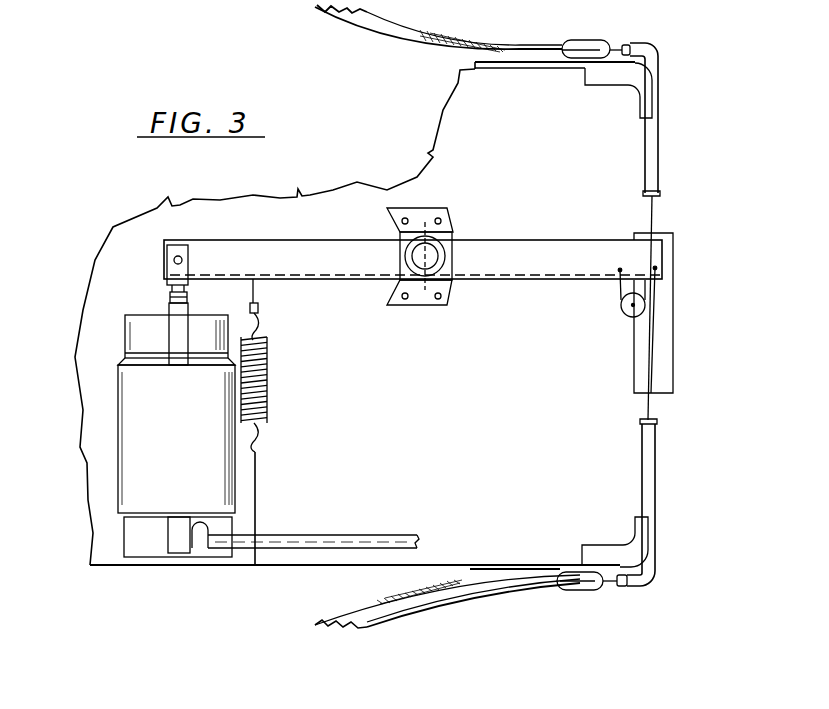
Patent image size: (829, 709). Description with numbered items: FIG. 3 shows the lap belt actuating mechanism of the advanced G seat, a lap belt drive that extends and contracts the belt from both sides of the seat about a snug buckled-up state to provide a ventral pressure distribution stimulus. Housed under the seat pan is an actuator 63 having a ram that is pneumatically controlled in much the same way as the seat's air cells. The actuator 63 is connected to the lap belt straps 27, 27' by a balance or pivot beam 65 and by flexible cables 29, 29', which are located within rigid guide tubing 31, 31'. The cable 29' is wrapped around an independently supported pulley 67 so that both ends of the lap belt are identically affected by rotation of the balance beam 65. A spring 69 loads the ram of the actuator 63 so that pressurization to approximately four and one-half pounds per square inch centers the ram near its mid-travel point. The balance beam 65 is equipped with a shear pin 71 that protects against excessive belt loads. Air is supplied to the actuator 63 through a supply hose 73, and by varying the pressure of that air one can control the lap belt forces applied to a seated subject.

The lap belt strap 27' is at (438, 44).
The lap belt strap 27 is at (447, 610).
The rigid guide tubing 31' is at (647, 118).
The rigid guide tubing 31 is at (637, 507).
The flexible cable 29' is at (690, 299).
The flexible cable 29 is at (600, 484).
The balance beam 65 is at (557, 280).
The pulley 67 is at (625, 317).
The spring 69 is at (270, 395).
The actuator 63 is at (187, 424).
The shear pin 71 is at (450, 230).
The supply hose 73 is at (395, 535).